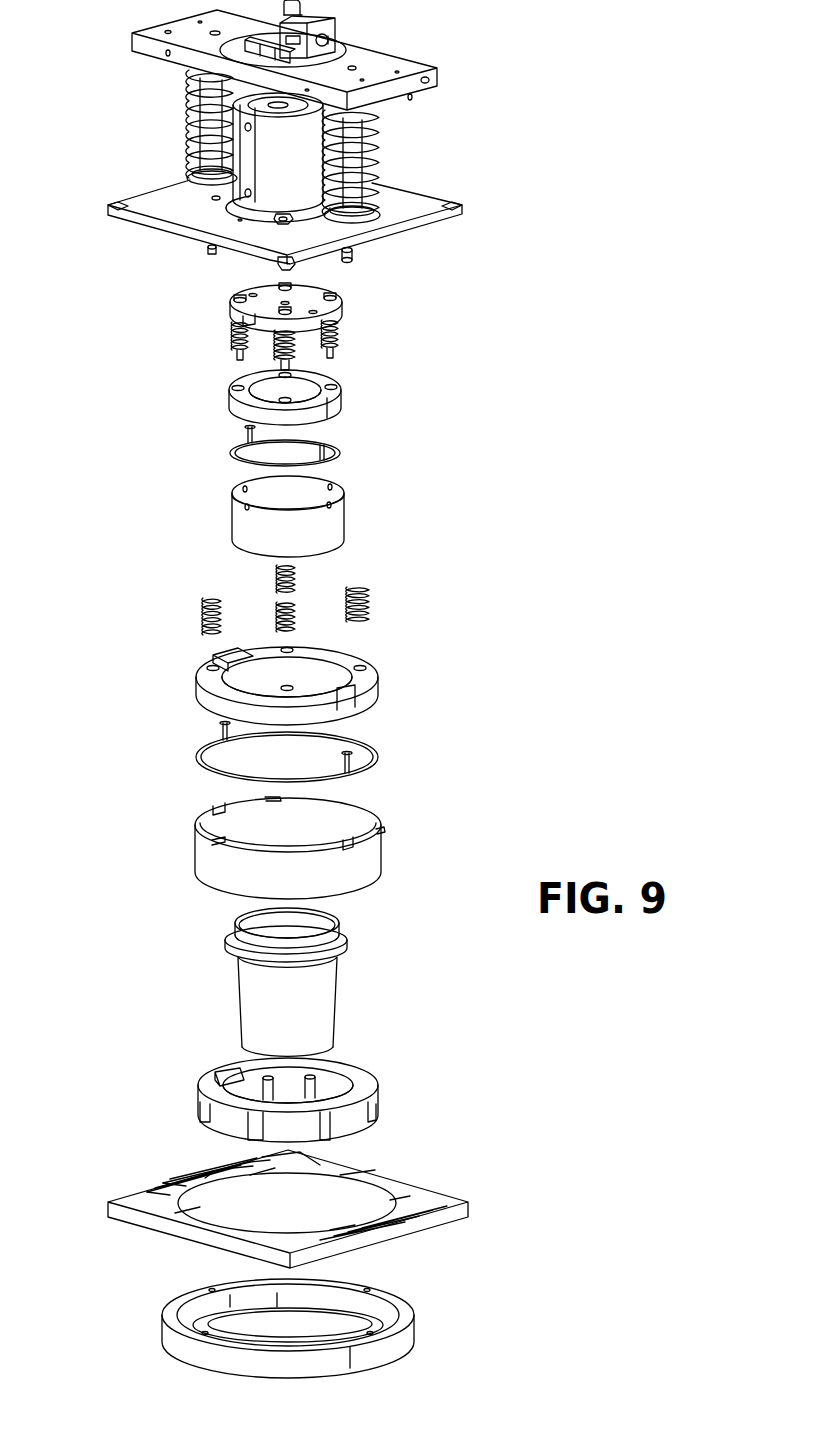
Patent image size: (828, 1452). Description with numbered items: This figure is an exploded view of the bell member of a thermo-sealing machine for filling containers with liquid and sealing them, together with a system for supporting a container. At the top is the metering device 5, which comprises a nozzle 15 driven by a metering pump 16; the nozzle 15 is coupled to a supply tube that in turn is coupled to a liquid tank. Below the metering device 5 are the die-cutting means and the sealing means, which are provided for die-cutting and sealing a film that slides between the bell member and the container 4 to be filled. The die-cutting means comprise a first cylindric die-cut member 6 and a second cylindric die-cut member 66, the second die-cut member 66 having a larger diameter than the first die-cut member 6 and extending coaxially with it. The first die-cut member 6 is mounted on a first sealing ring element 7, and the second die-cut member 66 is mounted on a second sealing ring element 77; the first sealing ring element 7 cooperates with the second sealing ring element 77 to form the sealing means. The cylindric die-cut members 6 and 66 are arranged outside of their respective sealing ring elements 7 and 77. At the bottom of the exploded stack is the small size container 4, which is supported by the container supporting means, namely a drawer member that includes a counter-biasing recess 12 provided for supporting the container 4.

The container 4 is at (323, 1010).
The metering device 5 is at (277, 163).
The first cylindric die-cut member 6 is at (248, 515).
The first sealing ring element 7 is at (339, 403).
The counter-biasing recess 12 is at (212, 1078).
The nozzle 15 is at (297, 213).
The metering pump 16 is at (335, 32).
The second cylindric die-cut member 66 is at (203, 855).
The second sealing ring element 77 is at (373, 688).